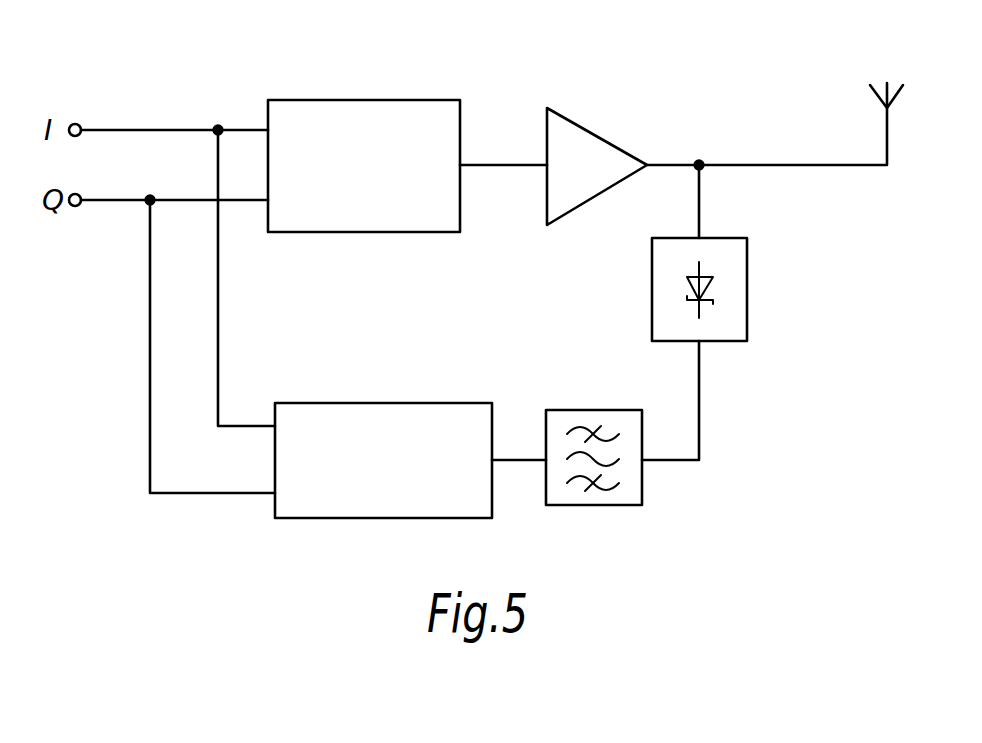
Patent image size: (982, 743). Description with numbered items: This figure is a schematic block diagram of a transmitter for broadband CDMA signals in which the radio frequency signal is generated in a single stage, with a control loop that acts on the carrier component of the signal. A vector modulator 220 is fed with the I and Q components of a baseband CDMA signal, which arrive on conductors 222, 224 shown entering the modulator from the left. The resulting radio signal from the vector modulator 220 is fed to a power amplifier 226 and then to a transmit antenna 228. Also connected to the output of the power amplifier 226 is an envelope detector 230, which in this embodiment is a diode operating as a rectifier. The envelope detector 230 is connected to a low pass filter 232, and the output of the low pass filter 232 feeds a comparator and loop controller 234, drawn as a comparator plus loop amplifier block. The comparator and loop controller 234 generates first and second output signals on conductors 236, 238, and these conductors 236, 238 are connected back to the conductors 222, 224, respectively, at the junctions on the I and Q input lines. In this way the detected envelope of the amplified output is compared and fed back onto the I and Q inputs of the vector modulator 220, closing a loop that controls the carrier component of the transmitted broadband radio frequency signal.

The vector modulator 220 is at (380, 100).
The conductor 222 is at (162, 130).
The conductor 224 is at (130, 201).
The power amplifier 226 is at (607, 150).
The transmit antenna 228 is at (880, 83).
The envelope detector 230 is at (749, 246).
The low pass filter 232 is at (583, 410).
The comparator and loop controller 234 is at (402, 403).
The conductor 236 is at (218, 330).
The conductor 238 is at (150, 312).